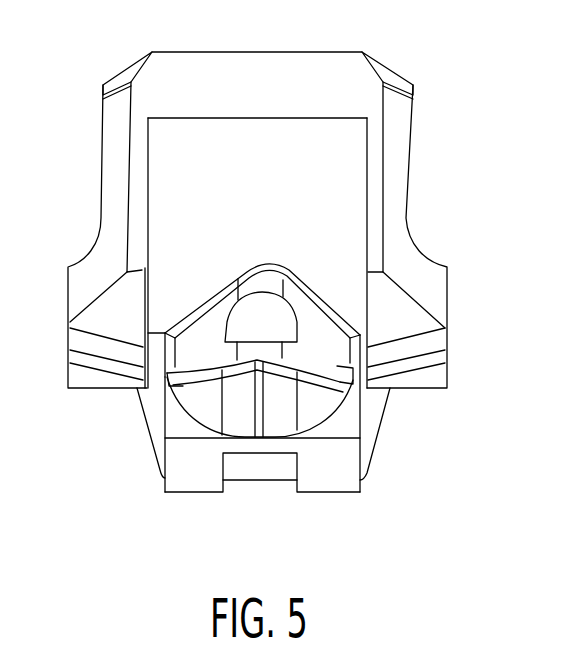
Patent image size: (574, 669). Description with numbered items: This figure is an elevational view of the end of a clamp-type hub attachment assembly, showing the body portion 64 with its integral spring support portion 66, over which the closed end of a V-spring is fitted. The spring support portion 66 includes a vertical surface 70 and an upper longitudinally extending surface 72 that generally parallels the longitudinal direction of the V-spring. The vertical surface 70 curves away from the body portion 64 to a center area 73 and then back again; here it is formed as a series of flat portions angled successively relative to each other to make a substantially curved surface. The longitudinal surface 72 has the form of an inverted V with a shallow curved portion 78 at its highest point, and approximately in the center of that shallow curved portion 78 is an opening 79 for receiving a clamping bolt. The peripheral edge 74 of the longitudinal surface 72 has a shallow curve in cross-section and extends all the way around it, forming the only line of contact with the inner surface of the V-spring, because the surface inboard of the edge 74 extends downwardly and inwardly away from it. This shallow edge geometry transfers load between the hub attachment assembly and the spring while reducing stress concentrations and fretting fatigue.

The body portion 64 is at (300, 46).
The spring support portion 66 is at (323, 276).
The vertical surface 70 is at (283, 427).
The upper longitudinally extending surface 72 is at (225, 302).
The center area 73 is at (258, 423).
The peripheral edge 74 is at (197, 382).
The shallow curved portion 78 is at (167, 377).
The opening 79 is at (263, 315).